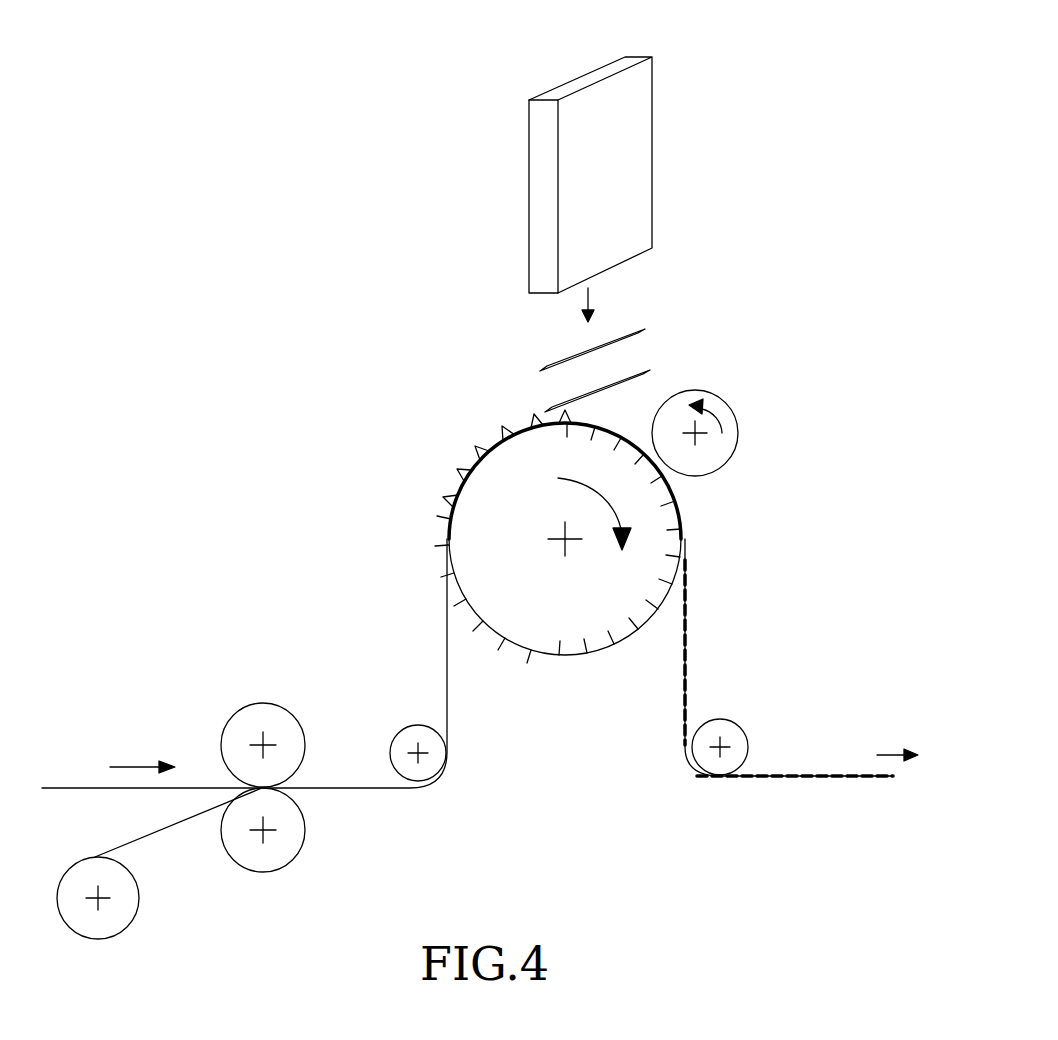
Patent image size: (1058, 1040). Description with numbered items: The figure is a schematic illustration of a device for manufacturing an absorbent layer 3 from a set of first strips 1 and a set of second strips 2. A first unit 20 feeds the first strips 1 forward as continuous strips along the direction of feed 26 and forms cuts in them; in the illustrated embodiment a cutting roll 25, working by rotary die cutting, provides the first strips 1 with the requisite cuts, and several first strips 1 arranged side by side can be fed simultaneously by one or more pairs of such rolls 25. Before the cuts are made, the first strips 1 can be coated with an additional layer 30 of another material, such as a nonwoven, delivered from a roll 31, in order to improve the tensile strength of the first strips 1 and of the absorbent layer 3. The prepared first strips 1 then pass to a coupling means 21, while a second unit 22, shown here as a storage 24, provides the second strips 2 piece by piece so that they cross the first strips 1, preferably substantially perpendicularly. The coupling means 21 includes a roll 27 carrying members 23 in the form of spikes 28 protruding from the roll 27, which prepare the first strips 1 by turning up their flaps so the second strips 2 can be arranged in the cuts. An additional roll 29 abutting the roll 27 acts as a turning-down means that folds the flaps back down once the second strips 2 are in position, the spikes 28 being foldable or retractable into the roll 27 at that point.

The first strips 1 is at (88, 788).
The second strips 2 is at (632, 372).
The layer 3 is at (791, 796).
The first unit 20 is at (193, 787).
The coupling means 21 is at (549, 563).
The second unit 22 is at (656, 172).
The members 23 is at (414, 487).
The storage 24 is at (622, 95).
The cutting roll 25 is at (278, 727).
The direction of feed 26 is at (140, 765).
The roll 27 is at (588, 598).
The spikes 28 is at (442, 556).
The additional roll 29 is at (712, 455).
The additional layer 30 is at (155, 830).
The roll 31 is at (110, 922).